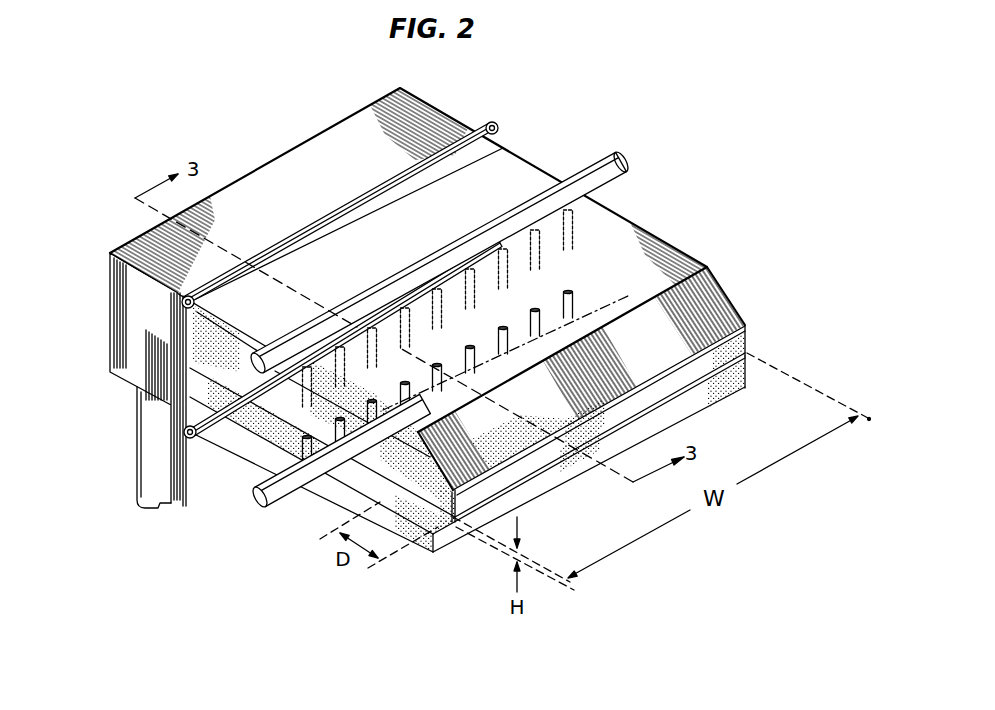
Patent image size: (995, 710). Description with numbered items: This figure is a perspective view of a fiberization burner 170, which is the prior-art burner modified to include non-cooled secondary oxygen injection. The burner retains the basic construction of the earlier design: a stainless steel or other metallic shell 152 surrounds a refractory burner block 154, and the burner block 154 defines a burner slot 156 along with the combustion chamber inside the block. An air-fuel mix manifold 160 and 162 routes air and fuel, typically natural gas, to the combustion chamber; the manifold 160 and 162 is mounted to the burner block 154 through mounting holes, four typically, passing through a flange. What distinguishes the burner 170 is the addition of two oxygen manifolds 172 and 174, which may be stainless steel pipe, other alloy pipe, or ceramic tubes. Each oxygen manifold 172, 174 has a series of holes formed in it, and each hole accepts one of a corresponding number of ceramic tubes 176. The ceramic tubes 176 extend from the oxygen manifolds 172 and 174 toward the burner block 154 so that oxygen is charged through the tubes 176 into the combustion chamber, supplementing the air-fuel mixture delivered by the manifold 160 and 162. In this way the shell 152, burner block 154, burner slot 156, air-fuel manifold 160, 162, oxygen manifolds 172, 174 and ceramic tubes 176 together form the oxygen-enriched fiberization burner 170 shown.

The shell 152 is at (717, 305).
The refractory burner block 154 is at (747, 337).
The burner slot 156 is at (747, 363).
The air-fuel mix manifold 160 is at (148, 444).
The air-fuel mix manifold 162 is at (128, 311).
The burner 170 is at (690, 184).
The oxygen manifold 172 is at (606, 158).
The oxygen manifold 174 is at (264, 503).
The ceramic tubes 176 is at (578, 292).